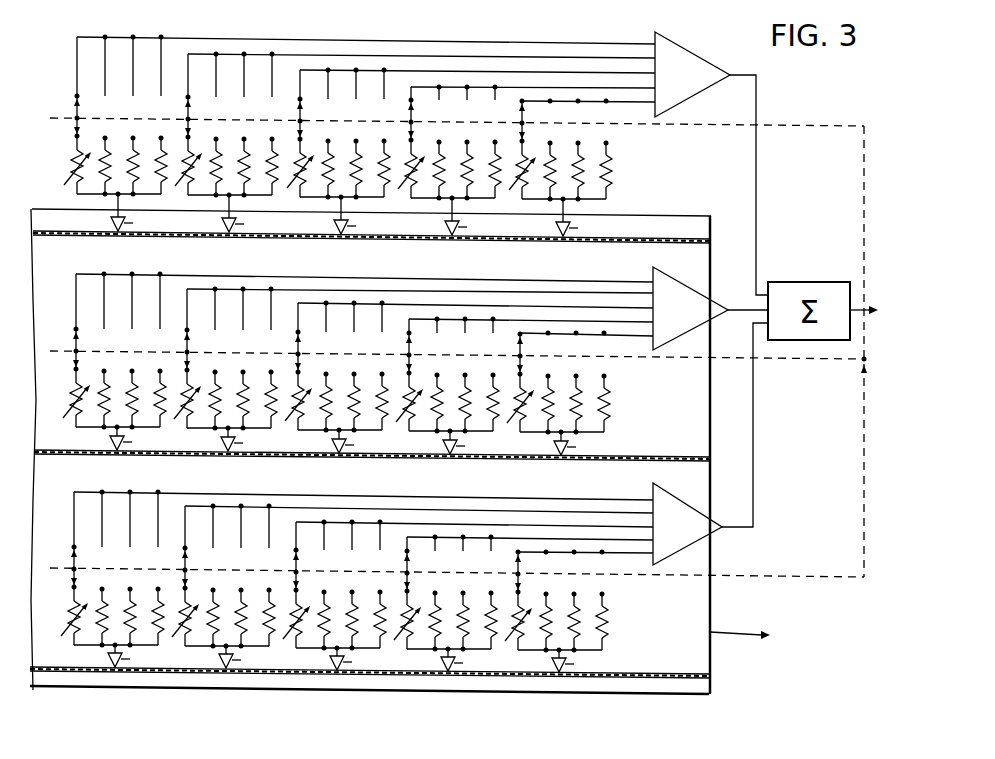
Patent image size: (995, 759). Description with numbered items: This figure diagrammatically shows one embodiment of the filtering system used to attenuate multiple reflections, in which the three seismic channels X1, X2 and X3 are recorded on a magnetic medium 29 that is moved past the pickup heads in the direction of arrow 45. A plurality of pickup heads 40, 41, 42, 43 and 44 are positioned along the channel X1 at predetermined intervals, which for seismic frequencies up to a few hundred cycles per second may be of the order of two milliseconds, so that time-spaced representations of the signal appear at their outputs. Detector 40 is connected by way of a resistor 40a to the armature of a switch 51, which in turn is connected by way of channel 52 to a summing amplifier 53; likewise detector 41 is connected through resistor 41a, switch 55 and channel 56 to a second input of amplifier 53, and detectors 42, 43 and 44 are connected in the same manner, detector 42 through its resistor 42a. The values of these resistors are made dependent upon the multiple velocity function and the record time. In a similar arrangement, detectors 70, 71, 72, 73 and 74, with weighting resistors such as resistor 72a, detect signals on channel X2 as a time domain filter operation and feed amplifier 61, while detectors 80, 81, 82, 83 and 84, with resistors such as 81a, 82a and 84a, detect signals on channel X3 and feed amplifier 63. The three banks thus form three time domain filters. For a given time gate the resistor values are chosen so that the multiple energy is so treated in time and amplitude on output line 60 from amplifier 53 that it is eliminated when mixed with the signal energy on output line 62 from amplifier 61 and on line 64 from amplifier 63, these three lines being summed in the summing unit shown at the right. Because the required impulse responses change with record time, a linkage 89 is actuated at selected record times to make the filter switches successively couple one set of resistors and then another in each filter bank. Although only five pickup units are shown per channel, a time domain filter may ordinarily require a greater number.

The magnetic medium 29 is at (620, 686).
The pickup head 40 is at (132, 213).
The pickup head 41 is at (243, 214).
The pickup head 42 is at (355, 216).
The pickup head 43 is at (466, 217).
The pickup head 44 is at (577, 218).
The resistor 40a is at (72, 156).
The resistor 41a is at (185, 150).
The resistor 42a is at (299, 150).
The arrow 45 is at (728, 636).
The switch 51 is at (75, 117).
The channel 52 is at (265, 37).
The summing amplifier 53 is at (686, 86).
The switch 55 is at (190, 118).
The channel 56 is at (378, 54).
The output line 60 is at (757, 214).
The amplifier 61 is at (683, 321).
The output line 62 is at (746, 309).
The amplifier 63 is at (683, 538).
The line 64 is at (754, 490).
The detector 70 is at (131, 439).
The detector 71 is at (242, 440).
The detector 72 is at (353, 442).
The detector 73 is at (464, 443).
The detector 74 is at (575, 444).
The resistor 72a is at (298, 385).
The detector 80 is at (129, 657).
The detector 81 is at (240, 658).
The detector 82 is at (351, 660).
The detector 83 is at (462, 661).
The detector 84 is at (573, 662).
The resistor 81a is at (186, 604).
The resistor 82a is at (296, 604).
The resistor 84a is at (519, 606).
The linkage 89 is at (822, 577).
The channel X1 is at (190, 228).
The channel X2 is at (190, 449).
The channel X3 is at (176, 680).